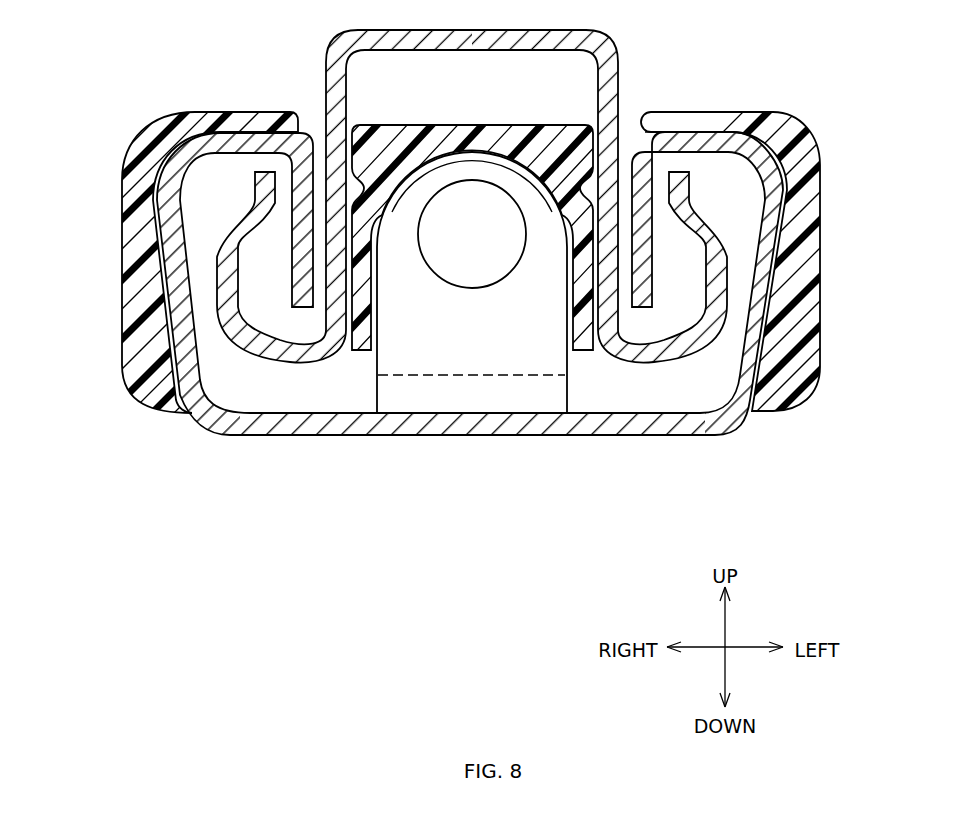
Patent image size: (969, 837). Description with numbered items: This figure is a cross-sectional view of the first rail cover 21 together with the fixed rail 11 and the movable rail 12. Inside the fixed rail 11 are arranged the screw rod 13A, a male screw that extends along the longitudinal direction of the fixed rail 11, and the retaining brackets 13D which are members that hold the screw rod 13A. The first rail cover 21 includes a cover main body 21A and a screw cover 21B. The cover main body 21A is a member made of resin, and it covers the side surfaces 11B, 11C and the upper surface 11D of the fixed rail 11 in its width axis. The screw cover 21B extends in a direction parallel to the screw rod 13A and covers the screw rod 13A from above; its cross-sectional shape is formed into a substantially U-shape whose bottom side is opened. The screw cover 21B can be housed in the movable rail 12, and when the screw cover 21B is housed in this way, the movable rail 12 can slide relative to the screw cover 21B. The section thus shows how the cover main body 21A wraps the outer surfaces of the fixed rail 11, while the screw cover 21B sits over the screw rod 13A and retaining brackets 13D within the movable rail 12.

The fixed rail 11 is at (718, 432).
The side surface 11B is at (773, 240).
The side surface 11C is at (173, 263).
The upper surface 11D is at (247, 143).
The movable rail 12 is at (622, 72).
The screw rod 13A is at (477, 288).
The retaining bracket 13D is at (506, 335).
The first rail cover 21 is at (510, 211).
The cover main body 21A is at (752, 110).
The screw cover 21B is at (453, 127).